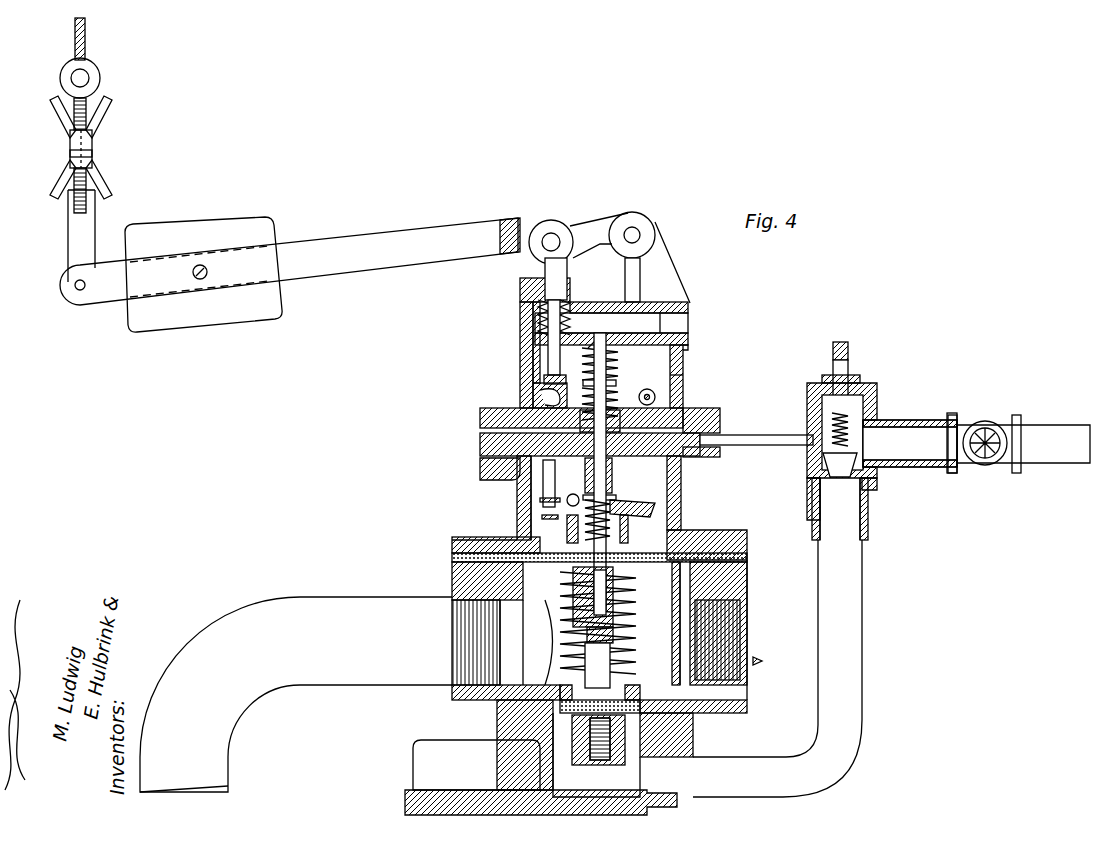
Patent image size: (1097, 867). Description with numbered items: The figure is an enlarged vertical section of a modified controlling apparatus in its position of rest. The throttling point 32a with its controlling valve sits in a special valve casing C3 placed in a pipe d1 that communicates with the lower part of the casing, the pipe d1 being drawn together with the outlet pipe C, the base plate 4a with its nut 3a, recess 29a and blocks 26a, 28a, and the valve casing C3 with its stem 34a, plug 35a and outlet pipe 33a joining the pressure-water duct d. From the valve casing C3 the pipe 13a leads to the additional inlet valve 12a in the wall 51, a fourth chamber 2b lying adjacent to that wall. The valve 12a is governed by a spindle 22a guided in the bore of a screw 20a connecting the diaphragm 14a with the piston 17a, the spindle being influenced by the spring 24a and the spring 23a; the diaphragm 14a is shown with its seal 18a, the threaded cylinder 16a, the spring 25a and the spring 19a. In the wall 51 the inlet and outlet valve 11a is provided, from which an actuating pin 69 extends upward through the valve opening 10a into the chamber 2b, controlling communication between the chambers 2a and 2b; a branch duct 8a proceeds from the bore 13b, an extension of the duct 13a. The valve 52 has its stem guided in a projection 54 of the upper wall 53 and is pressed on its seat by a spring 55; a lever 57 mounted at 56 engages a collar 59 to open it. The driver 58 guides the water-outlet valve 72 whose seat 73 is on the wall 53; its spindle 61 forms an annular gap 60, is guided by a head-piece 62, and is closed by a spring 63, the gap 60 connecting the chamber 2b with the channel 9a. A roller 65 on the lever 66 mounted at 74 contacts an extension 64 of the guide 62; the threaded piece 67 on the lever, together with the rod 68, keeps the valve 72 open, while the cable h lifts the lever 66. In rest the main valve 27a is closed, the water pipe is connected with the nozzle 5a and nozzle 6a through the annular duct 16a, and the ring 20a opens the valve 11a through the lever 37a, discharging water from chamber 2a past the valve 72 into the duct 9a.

The cable h is at (88, 53).
The adjustable rod with wing nut 68 is at (84, 221).
The threaded piece 67 is at (167, 236).
The lever 66 is at (304, 253).
The extension 64 is at (502, 223).
The roller 65 is at (549, 230).
The lever mounting 74 is at (635, 232).
The spindle 61 is at (520, 297).
The head-piece 62 is at (570, 280).
The spring 63 is at (520, 322).
The annular gap 60 is at (520, 347).
The projection 54 is at (540, 372).
The lever 57 is at (540, 386).
The driver 58 is at (538, 398).
The branch duct 8a is at (480, 432).
The actuating pin 69 is at (480, 465).
The channel 9a is at (678, 323).
The upper wall 53 is at (687, 328).
The fourth chamber 2b is at (687, 360).
The valve 52 is at (682, 380).
The seat 73 is at (605, 330).
The water-outlet valve 72 is at (650, 323).
The spring 55 is at (612, 357).
The collar 59 is at (617, 382).
The lever mounting 56 is at (658, 396).
The wall 51 is at (705, 466).
The bore 13b is at (720, 412).
The pipe 13a is at (733, 440).
The valve opening 10a is at (543, 496).
The diaphragm 14a is at (517, 540).
The inlet and outlet valve 11a is at (530, 512).
The lever 37a is at (566, 489).
The chamber 2a is at (582, 527).
The additional inlet valve 12a is at (616, 483).
The spring 24a is at (640, 510).
The screw 20a is at (630, 530).
The spring 23a is at (665, 535).
The piston 17a is at (500, 540).
The diaphragm 18a is at (530, 557).
The annular duct 16a is at (452, 597).
The spindle 22a is at (567, 572).
The main spring 25a is at (562, 625).
The nozzle 6a is at (728, 640).
The discharge nozzle 5a is at (500, 672).
The spring 19a is at (530, 675).
The recess 29a is at (530, 737).
The nut 3a is at (596, 755).
The base plate 4a is at (667, 808).
The bottom band 26a is at (693, 710).
The right block 28a is at (693, 722).
The main valve 27a is at (680, 737).
The valve stem 34a is at (847, 342).
The valve plug 35a is at (842, 462).
The outlet pipe 33a is at (880, 427).
The pipe d is at (927, 437).
The valve casing C3 is at (826, 499).
The throttling point 32a is at (867, 492).
The pipe d1 is at (842, 628).
The outlet pipe C is at (182, 663).